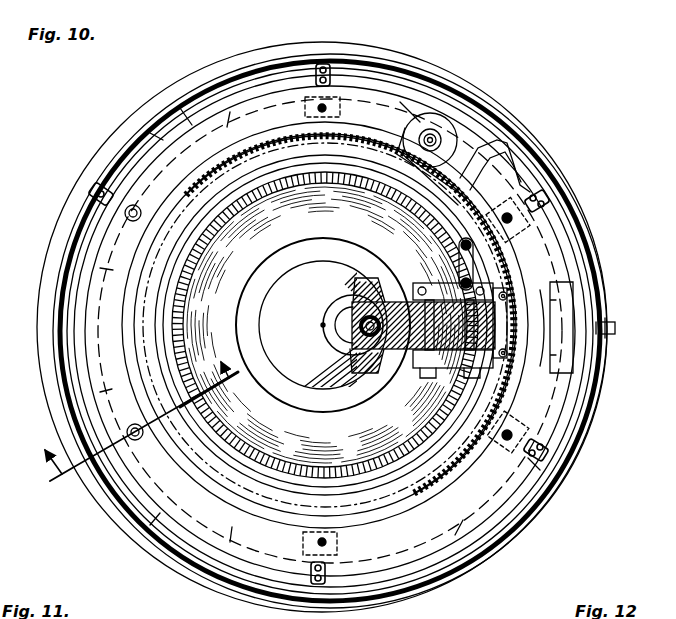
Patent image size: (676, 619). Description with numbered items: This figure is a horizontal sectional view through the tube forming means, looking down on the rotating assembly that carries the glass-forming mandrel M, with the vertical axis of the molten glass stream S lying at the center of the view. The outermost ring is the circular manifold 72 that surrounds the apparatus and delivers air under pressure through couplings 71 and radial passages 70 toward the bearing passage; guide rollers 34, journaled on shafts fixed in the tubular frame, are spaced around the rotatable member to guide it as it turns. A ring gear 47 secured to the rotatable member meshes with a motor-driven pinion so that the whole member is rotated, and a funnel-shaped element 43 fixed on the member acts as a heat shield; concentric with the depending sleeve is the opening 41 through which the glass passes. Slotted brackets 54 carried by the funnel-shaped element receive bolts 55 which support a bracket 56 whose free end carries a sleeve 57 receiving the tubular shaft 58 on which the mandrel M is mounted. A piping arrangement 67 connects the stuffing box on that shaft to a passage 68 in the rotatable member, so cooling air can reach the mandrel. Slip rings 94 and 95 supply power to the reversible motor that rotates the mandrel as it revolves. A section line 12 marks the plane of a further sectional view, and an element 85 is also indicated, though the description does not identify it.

The section line 12- 12 is at (137, 411).
The guide rollers 34 is at (178, 107).
The opening 41 is at (264, 263).
The funnel-shaped element 43 is at (183, 309).
The ring gear 47 is at (257, 145).
The brackets 54 is at (445, 371).
The bolts 55 is at (438, 272).
The bracket 56 is at (448, 357).
The sleeve 57 is at (358, 373).
The tubular shaft 58 is at (358, 272).
The piping arrangement 67 is at (478, 262).
The passage 68 is at (457, 245).
The radial passages 70 is at (97, 190).
The couplings 71 is at (350, 618).
The circular manifold 72 is at (308, 617).
The roller pivot 85 is at (472, 155).
The slip ring 94 is at (491, 187).
The slip ring 95 is at (468, 170).
The mandrel M is at (306, 278).
The stream S is at (321, 325).